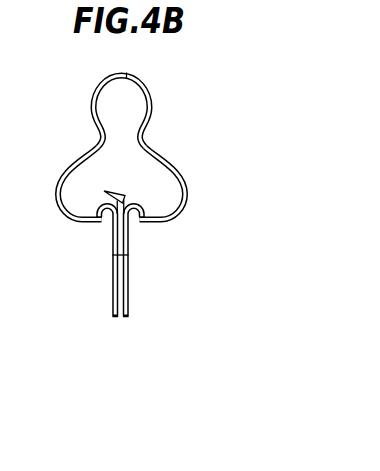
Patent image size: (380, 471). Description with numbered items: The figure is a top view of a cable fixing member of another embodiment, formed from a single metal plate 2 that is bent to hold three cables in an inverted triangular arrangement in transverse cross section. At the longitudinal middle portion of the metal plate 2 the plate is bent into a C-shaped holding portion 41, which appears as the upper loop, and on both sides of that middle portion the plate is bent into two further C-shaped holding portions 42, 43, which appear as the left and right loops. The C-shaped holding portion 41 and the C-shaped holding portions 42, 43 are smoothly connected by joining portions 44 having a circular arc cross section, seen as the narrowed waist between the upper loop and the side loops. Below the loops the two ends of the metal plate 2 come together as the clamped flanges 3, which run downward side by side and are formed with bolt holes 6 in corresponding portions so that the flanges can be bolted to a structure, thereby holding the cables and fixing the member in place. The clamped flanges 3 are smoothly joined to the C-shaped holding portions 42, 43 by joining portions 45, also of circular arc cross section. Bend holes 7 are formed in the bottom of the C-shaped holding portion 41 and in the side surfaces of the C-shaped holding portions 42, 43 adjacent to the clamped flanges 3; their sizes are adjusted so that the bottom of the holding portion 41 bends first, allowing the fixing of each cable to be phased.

The metal plate 2 is at (114, 291).
The clamped flanges 3 is at (125, 309).
The bolt holes 6 is at (125, 272).
The bend holes 7 is at (126, 78).
The C-shaped holding portion 41 is at (148, 89).
The C-shaped holding portion 42 is at (60, 181).
The C-shaped holding portion 43 is at (182, 181).
The joining portions 44 is at (137, 145).
The joining portions 45 is at (104, 191).